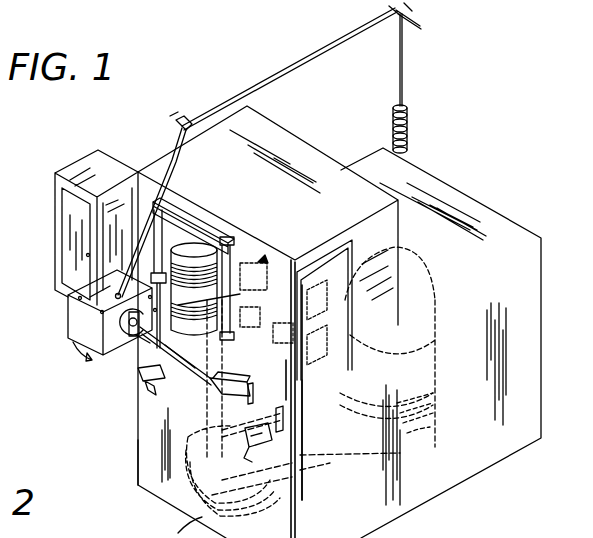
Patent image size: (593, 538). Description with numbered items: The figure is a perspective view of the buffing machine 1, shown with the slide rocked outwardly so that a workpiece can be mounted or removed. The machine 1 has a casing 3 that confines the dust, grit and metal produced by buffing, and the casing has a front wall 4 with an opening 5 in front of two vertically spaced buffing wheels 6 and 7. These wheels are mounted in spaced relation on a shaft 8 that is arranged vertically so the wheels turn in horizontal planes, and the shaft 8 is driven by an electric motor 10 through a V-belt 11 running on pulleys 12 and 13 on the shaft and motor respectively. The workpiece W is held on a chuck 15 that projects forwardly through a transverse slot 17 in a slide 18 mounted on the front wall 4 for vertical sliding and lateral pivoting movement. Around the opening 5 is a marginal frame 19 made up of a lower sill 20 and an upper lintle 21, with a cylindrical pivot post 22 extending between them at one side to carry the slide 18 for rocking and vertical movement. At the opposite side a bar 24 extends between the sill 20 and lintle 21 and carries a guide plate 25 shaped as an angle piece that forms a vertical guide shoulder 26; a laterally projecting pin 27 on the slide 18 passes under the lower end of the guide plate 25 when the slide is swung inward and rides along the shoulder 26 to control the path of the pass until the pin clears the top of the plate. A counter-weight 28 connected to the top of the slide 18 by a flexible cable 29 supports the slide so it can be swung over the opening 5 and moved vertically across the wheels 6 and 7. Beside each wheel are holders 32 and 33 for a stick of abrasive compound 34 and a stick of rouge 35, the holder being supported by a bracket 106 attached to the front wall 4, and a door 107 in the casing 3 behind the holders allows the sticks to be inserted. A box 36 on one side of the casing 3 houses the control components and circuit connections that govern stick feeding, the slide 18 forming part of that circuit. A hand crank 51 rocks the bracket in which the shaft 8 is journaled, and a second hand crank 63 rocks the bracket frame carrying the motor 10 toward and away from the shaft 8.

The machine 1 is at (520, 442).
The casing 3 is at (151, 456).
The front wall 4 is at (182, 527).
The opening 5 is at (142, 347).
The buffing wheel 6 is at (195, 368).
The buffing wheel 7 is at (213, 232).
The shaft 8 is at (205, 423).
The electric motor 10 is at (435, 352).
The V-belt 11 is at (334, 468).
The pulley 12 is at (226, 500).
The pulley 13 is at (420, 447).
The chuck 15 is at (90, 297).
The transverse slot 17 is at (130, 278).
The slide 18 is at (68, 297).
The marginal frame 19 is at (243, 250).
The lower sill 20 is at (207, 388).
The upper lintle 21 is at (226, 228).
The pivot post 22 is at (154, 248).
The bar 24 is at (236, 378).
The guide plate 25 is at (224, 291).
The guide shoulder 26 is at (195, 289).
The pin 27 is at (68, 340).
The counter-weight 28 is at (393, 121).
The flexible cable 29 is at (303, 61).
The holder 32 is at (316, 437).
The holder 33 is at (324, 310).
The stick of abrasive compound 34 is at (238, 340).
The stick of rouge 35 is at (264, 252).
The box 36 is at (80, 175).
The hand crank 51 is at (141, 384).
The hand crank 63 is at (254, 450).
The bracket 106 is at (273, 407).
The door 107 is at (352, 330).
The workpiece W is at (120, 323).